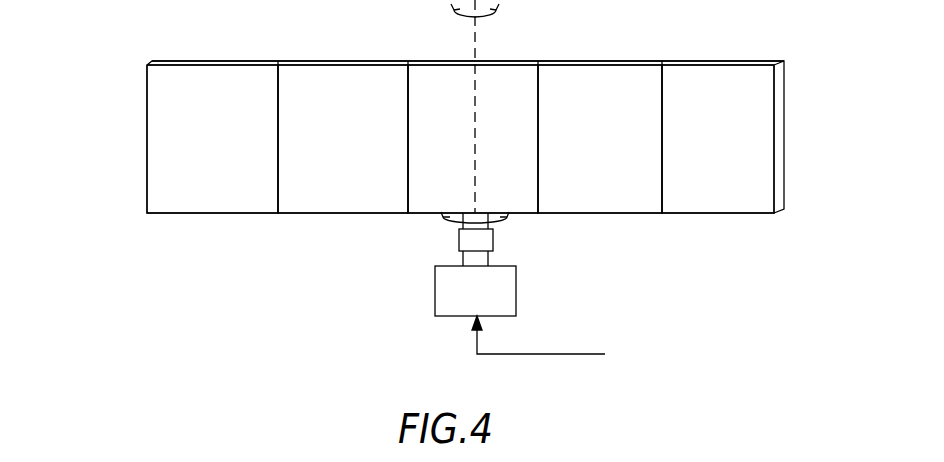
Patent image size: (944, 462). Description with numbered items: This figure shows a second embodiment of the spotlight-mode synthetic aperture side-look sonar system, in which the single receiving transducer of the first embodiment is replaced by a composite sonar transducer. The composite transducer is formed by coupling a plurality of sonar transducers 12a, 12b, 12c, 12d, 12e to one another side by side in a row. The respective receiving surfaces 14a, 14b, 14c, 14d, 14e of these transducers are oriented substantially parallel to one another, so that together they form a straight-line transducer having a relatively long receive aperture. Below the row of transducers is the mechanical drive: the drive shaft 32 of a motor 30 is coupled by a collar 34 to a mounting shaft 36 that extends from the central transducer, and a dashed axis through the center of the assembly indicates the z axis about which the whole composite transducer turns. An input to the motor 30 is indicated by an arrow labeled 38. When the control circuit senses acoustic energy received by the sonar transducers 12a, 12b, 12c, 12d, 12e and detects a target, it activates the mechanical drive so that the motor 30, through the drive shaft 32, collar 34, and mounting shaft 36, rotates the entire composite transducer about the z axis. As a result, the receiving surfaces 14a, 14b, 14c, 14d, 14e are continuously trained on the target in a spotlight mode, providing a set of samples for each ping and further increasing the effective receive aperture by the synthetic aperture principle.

The sonar transducer 12a is at (223, 61).
The sonar transducer 12b is at (350, 61).
The sonar transducer 12c is at (505, 61).
The sonar transducer 12d is at (635, 61).
The sonar transducer 12e is at (757, 61).
The receiving surface 14a is at (155, 118).
The receiving surface 14b is at (307, 81).
The receiving surface 14c is at (445, 87).
The receiving surface 14d is at (600, 88).
The receiving surface 14e is at (708, 88).
The motor 30 is at (445, 289).
The drive shaft 32 is at (478, 258).
The collar 34 is at (472, 243).
The mounting shaft 36 is at (475, 222).
The power input 38 is at (565, 354).